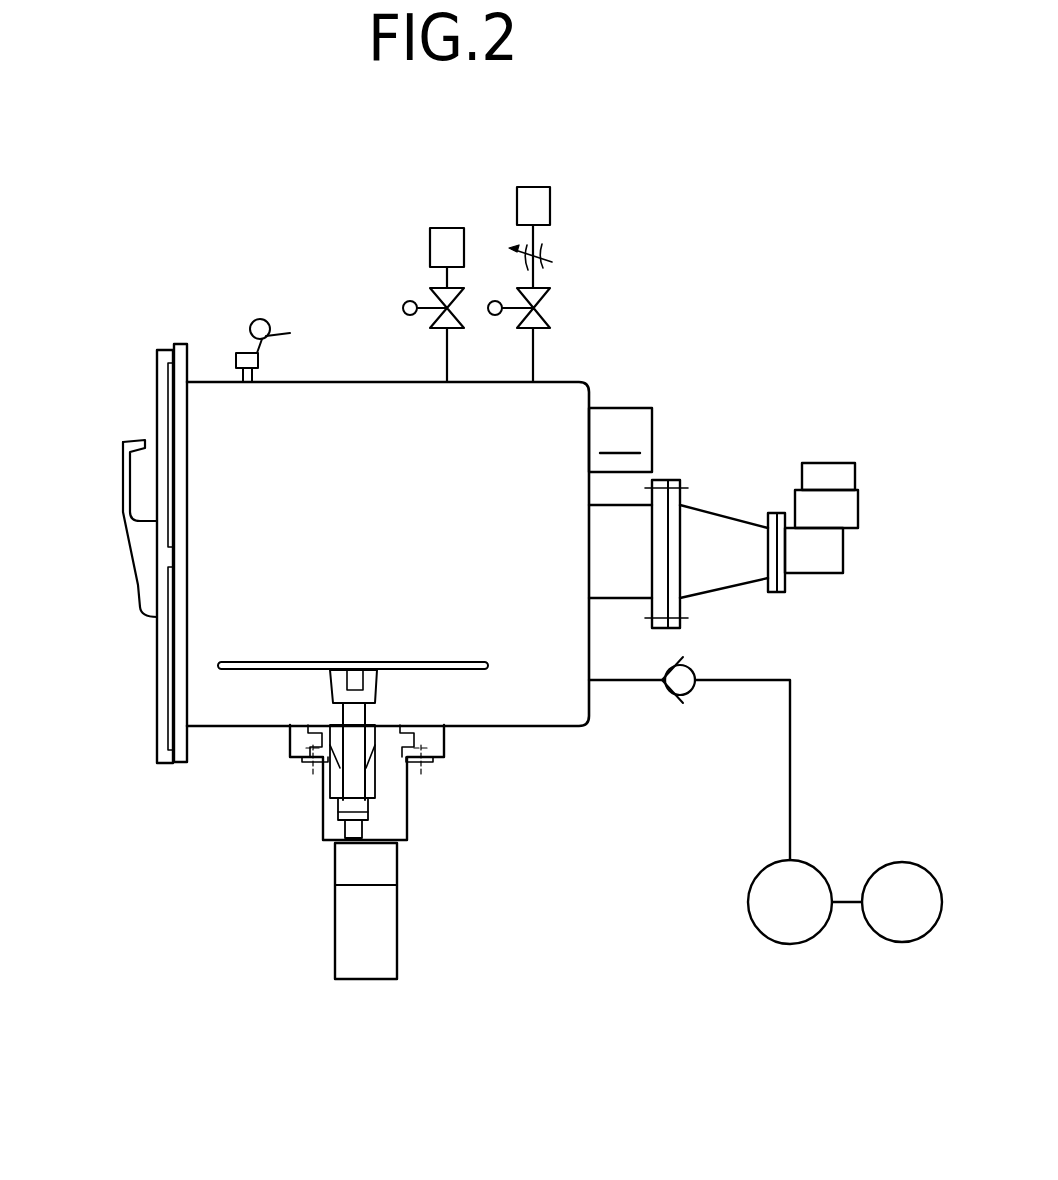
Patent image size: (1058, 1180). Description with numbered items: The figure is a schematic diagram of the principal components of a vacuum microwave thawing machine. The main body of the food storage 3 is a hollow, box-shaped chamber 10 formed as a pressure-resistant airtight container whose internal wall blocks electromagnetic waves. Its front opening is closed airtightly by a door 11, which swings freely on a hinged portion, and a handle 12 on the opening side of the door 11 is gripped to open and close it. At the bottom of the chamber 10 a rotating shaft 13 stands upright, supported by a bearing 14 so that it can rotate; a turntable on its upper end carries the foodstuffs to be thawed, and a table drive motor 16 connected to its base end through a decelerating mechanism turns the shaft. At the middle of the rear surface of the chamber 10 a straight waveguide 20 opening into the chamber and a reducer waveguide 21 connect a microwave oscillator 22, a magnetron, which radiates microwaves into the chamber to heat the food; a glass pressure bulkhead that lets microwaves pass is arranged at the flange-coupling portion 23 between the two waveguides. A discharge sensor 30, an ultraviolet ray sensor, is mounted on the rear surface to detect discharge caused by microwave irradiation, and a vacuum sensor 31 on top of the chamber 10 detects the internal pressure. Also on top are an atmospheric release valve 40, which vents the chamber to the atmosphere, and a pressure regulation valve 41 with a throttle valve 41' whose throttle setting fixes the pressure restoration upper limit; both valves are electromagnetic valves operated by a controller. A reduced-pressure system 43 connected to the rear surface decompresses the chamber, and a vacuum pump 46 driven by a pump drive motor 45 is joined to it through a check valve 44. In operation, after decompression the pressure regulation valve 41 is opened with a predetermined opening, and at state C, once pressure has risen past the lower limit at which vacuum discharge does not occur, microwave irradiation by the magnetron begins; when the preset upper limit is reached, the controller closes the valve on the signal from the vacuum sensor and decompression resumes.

The food storage 3 is at (158, 401).
The chamber 10 is at (586, 368).
The door 11 is at (157, 675).
The handle 12 is at (124, 520).
The rotating shaft 13 is at (353, 785).
The bearing 14 is at (460, 662).
The table drive motor 16 is at (398, 917).
The straight waveguide 20 is at (620, 582).
The reducer waveguide 21 is at (720, 572).
The microwave oscillator 22 is at (850, 508).
The flange-coupling portion 23 is at (672, 481).
The discharge sensor 30 is at (617, 408).
The state C is at (633, 452).
The vacuum sensor 31 is at (234, 354).
The atmospheric release valve 40 is at (438, 298).
The pressure regulation valve 41 is at (560, 284).
The throttle valve 41' is at (563, 235).
The reduced-pressure system 43 is at (793, 718).
The check valve 44 is at (690, 700).
The pump drive motor 45 is at (898, 945).
The vacuum pump 46 is at (788, 945).